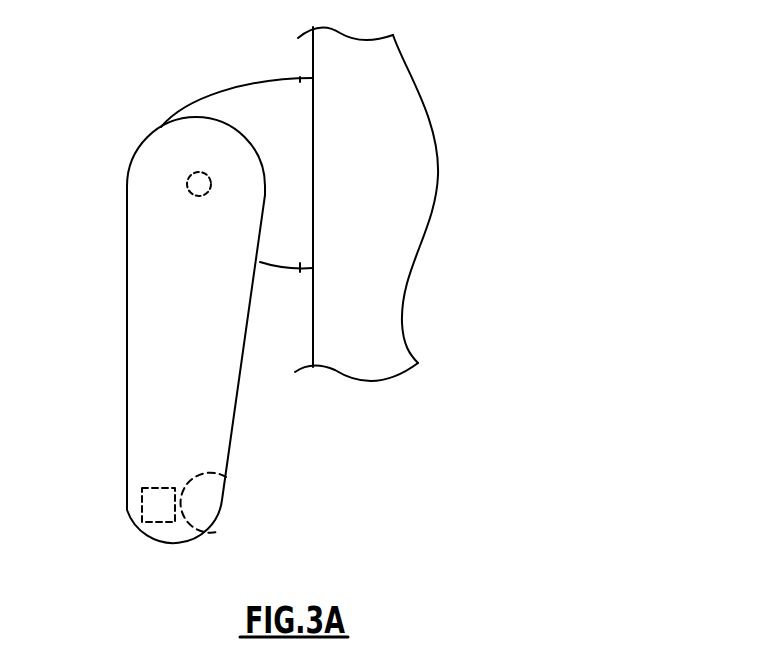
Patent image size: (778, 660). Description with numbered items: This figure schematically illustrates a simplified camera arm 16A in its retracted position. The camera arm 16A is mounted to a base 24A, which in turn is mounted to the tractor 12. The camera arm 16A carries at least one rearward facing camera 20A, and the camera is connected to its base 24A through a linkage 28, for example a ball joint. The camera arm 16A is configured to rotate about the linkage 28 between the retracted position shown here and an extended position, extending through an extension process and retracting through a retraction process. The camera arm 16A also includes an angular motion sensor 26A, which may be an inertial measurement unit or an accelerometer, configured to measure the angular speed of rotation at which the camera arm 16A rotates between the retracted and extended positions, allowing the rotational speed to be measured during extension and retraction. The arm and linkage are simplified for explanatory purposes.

The tractor 12 is at (393, 208).
The base 24A is at (263, 102).
The camera arm 16A is at (137, 263).
The linkage 28 is at (187, 184).
The rearward facing camera 20A is at (210, 498).
The angular motion sensor 26A is at (140, 505).